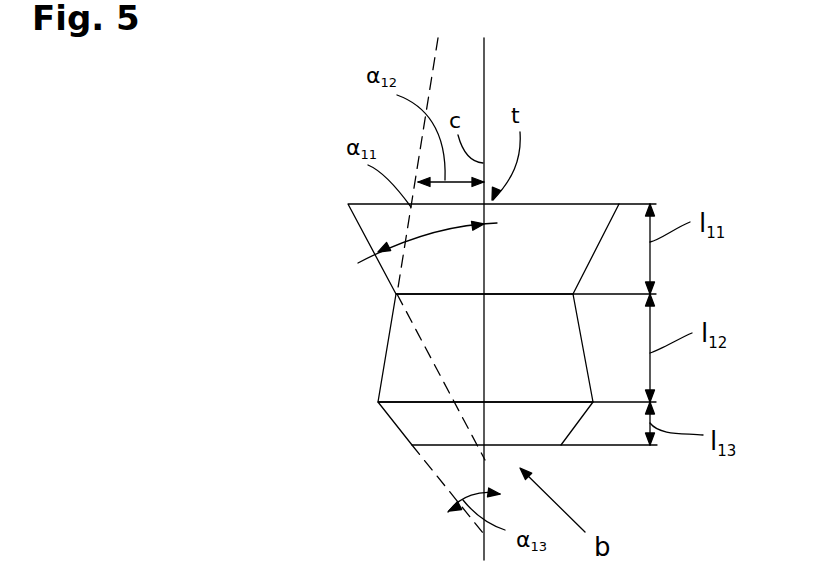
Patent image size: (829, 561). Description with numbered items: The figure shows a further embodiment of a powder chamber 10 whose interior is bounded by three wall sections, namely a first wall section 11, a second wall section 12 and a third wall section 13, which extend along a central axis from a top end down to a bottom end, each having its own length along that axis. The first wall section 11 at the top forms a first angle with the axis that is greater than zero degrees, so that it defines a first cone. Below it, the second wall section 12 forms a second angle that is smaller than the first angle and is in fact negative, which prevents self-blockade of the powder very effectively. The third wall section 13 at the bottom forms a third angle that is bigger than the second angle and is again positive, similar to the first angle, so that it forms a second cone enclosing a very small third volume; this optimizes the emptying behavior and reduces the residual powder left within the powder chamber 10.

The powder chamber 10 is at (459, 250).
The first wall section 11 is at (355, 225).
The second wall section 12 is at (388, 342).
The third wall section 13 is at (402, 433).